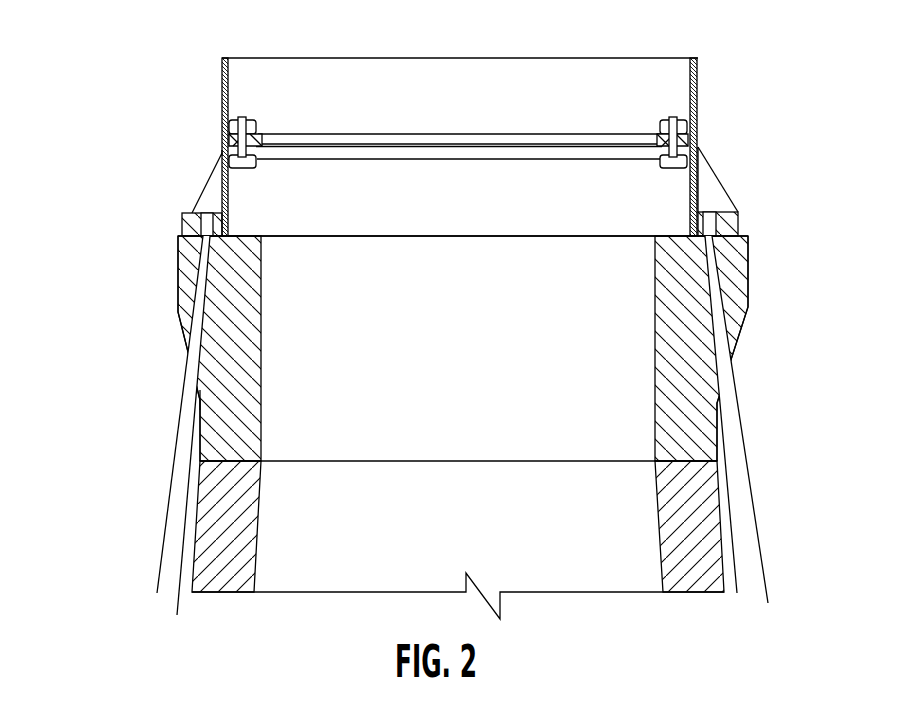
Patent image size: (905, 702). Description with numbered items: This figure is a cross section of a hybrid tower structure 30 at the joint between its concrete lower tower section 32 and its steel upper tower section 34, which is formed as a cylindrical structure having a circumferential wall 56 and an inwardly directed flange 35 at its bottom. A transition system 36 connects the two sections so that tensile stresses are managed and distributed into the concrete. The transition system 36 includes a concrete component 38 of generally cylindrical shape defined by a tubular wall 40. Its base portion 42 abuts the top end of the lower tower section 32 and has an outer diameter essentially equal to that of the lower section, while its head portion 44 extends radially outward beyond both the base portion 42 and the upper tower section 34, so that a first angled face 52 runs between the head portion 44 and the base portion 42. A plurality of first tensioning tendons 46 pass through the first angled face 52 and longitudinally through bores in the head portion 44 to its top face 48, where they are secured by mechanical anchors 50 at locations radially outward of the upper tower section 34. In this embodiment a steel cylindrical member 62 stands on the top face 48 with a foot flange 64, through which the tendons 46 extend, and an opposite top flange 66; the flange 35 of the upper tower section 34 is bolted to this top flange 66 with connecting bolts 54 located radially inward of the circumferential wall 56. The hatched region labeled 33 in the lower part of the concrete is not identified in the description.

The tower structure 30 is at (85, 91).
The lower tower section 32 is at (600, 592).
The lower body portion 33 is at (258, 533).
The upper tower section 34 is at (452, 58).
The flange 35 is at (260, 137).
The transition system 36 is at (84, 295).
The concrete component 38 is at (194, 401).
The tubular wall 40 is at (262, 362).
The base portion 42 is at (700, 430).
The head portion 44 is at (178, 257).
The first tensioning tendons 46 is at (177, 605).
The top face 48 is at (238, 230).
The mechanical anchors 50 is at (207, 213).
The first angled face 52 is at (740, 338).
The connecting bolts 54 is at (222, 138).
The circumferential wall 56 is at (698, 100).
The cylindrical member 62 is at (698, 187).
The foot flange 64 is at (733, 225).
The top flange 66 is at (222, 153).